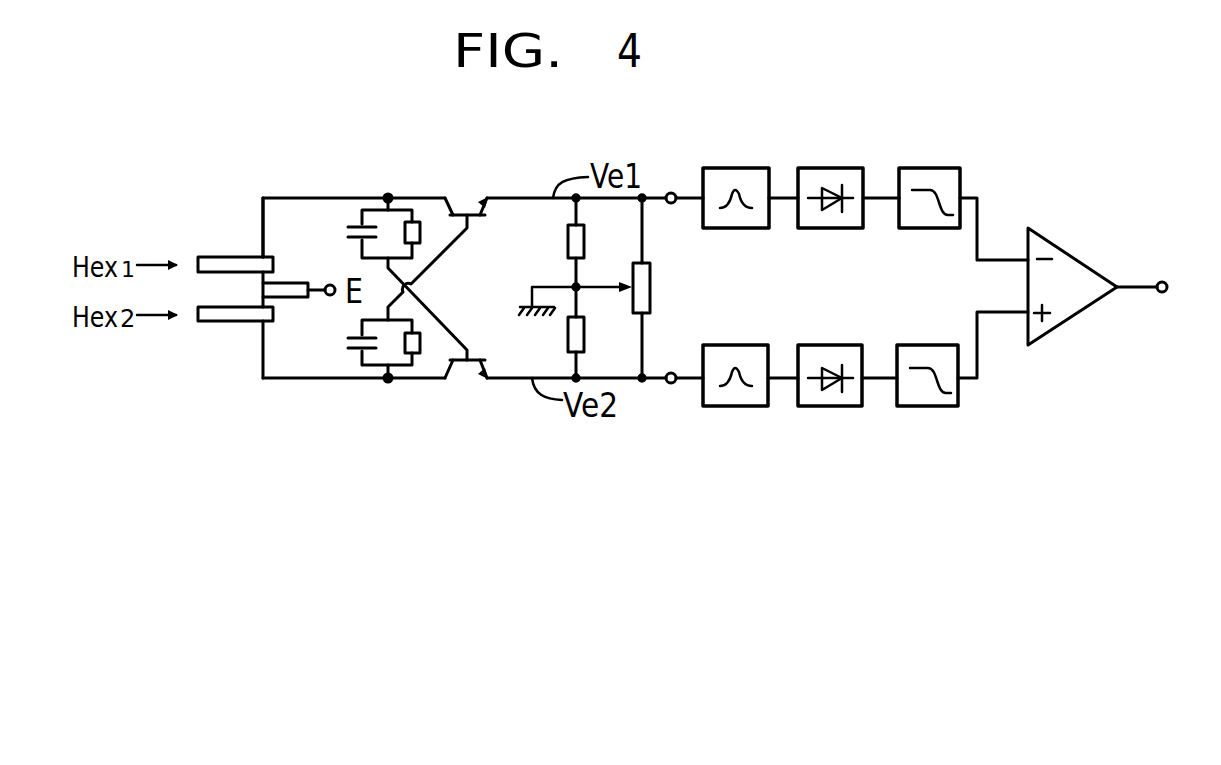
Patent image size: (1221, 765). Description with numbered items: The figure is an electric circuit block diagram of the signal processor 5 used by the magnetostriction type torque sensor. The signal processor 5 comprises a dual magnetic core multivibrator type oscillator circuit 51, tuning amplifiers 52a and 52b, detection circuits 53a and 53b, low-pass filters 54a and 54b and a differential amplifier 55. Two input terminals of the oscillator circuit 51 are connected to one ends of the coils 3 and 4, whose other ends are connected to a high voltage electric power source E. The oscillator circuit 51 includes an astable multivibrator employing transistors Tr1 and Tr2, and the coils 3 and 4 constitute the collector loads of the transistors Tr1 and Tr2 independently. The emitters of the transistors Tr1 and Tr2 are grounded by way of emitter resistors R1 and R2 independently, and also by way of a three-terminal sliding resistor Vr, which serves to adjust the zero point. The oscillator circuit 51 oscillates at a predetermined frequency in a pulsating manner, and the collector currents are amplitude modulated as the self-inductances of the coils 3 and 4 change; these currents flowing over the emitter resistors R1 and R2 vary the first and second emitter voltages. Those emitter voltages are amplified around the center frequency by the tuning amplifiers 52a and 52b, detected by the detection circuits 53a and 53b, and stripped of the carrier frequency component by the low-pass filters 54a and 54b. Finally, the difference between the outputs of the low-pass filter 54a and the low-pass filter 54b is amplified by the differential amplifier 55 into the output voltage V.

The coil 3 is at (206, 264).
The coil 4 is at (222, 312).
The signal processor 5 is at (243, 159).
The oscillator circuit 51 is at (501, 332).
The tuning amplifier 52a is at (768, 168).
The tuning amplifier 52b is at (708, 407).
The detection circuit 53a is at (853, 168).
The detection circuit 53b is at (818, 407).
The low-pass filter 54a is at (948, 168).
The low-pass filter 54b is at (942, 407).
The differential amplifier 55 is at (1080, 280).
The transistor Tr1 is at (465, 184).
The transistor Tr2 is at (465, 392).
The emitter resistor R1 is at (553, 242).
The emitter resistor R2 is at (553, 332).
The 3-terminal sliding resistor Vr is at (631, 288).